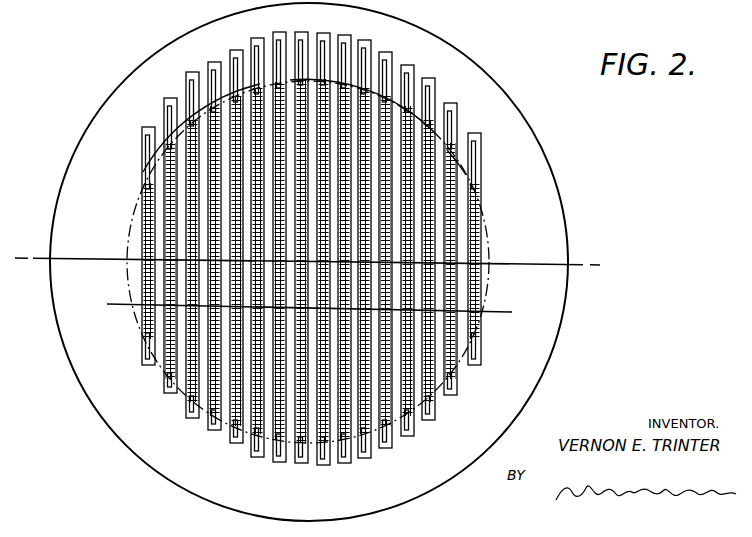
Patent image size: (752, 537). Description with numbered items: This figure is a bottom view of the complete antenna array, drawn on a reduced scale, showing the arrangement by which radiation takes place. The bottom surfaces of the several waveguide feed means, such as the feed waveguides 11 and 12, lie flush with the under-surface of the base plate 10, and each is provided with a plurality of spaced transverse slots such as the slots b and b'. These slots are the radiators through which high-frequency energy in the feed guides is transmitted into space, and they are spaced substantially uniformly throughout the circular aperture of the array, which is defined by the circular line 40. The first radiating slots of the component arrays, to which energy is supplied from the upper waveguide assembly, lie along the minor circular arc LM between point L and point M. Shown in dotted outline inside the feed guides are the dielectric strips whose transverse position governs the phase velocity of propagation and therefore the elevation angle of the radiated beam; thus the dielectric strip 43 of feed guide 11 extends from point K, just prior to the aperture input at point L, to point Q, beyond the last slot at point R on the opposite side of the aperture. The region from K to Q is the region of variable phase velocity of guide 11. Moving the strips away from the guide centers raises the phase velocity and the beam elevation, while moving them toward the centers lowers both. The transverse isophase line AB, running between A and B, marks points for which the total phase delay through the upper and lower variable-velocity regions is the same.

The base plate 10 is at (166, 48).
The feed waveguide 11 is at (148, 128).
The feed waveguide 12 is at (171, 98).
The circular line 40 is at (489, 254).
The dielectric strip 43 is at (133, 241).
The transverse slot b is at (123, 200).
The transverse slot b' is at (158, 124).
The point K is at (130, 148).
The point L is at (130, 174).
The point M is at (488, 180).
The point Q is at (150, 360).
The point R is at (130, 342).
The isophase line end A is at (298, 307).
The isophase line end B is at (527, 312).